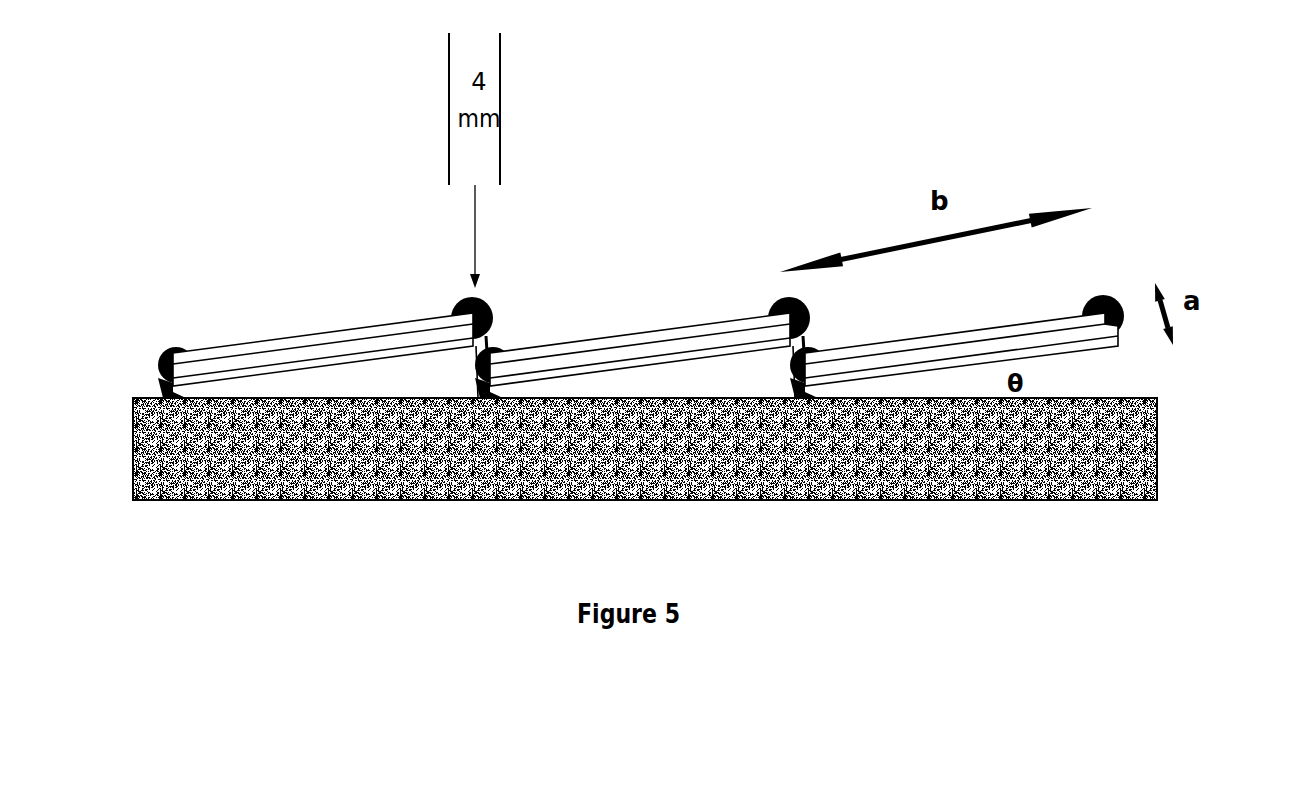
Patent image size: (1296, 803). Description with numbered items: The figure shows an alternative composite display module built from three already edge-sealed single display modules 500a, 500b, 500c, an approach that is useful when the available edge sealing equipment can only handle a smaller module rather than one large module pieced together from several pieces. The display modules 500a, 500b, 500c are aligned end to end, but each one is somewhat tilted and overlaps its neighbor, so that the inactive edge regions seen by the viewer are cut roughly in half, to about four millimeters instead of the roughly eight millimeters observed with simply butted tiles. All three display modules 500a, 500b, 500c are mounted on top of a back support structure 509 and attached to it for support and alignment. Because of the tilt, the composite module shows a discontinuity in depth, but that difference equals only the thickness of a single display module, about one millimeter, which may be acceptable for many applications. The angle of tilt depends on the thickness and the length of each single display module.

The edge sealed display module 500a is at (312, 330).
The edge sealed display module 500b is at (627, 327).
The edge sealed display module 500c is at (917, 330).
The back support structure 509 is at (1162, 435).